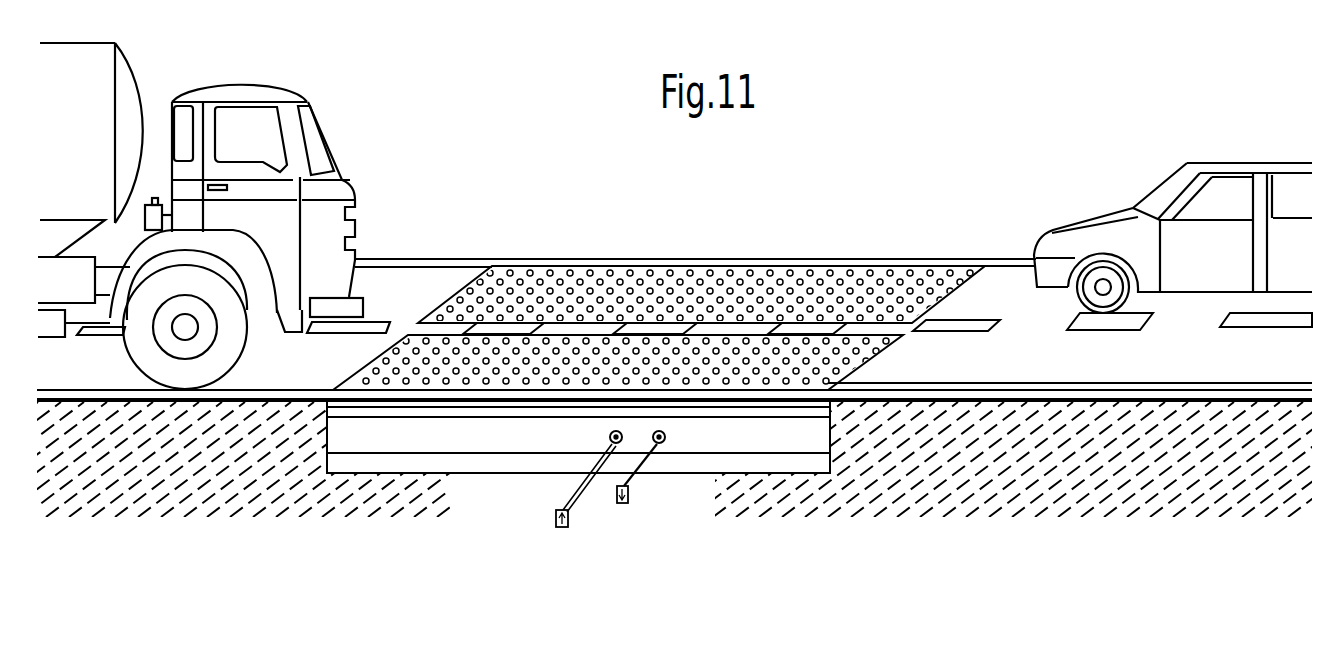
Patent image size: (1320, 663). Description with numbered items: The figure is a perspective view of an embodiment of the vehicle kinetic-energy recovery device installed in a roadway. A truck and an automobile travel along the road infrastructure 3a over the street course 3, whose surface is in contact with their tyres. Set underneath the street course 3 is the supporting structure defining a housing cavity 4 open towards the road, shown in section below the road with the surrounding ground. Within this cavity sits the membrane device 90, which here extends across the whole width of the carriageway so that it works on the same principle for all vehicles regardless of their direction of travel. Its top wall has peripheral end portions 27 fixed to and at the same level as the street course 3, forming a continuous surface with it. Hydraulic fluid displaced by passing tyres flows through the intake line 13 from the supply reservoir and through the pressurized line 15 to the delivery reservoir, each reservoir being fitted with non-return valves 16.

The street course 3 is at (430, 288).
The road infrastructure 3a is at (1018, 250).
The device 90 is at (666, 254).
The peripheral end portions 27 is at (492, 267).
The housing cavity 4 is at (328, 462).
The intake line 13 is at (578, 484).
The pressurized line 15 is at (646, 460).
The non-return valves 16 is at (562, 528).